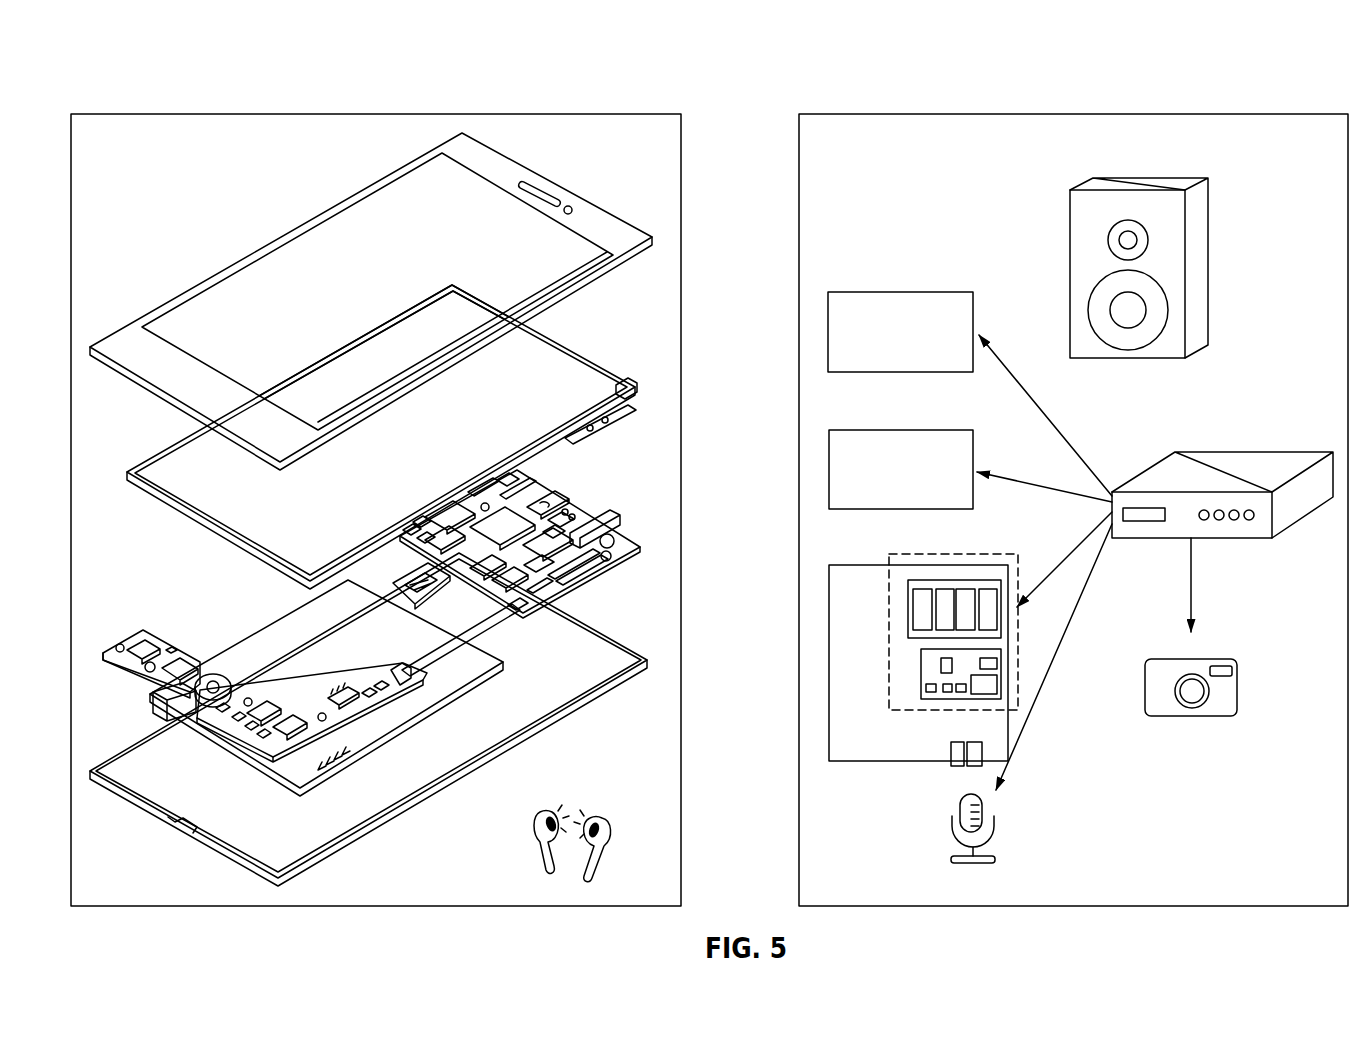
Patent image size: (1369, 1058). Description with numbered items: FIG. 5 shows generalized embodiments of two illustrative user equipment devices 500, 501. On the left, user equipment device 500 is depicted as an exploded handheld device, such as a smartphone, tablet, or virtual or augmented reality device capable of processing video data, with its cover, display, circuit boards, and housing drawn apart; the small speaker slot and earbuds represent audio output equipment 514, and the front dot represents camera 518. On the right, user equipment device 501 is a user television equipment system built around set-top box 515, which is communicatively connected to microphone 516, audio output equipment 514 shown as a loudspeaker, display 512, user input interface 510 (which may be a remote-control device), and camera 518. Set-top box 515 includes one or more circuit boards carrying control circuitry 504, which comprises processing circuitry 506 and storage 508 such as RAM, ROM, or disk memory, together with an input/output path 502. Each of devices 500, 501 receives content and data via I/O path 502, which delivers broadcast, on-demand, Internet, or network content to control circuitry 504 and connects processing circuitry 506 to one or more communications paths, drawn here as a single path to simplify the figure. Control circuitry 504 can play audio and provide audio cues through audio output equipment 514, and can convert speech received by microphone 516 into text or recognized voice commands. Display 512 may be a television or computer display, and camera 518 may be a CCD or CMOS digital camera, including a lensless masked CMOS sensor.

The user equipment device 500 is at (170, 80).
The user equipment device 501 is at (1250, 88).
The input/output (I/O) path 502 is at (292, 720).
The control circuitry 504 is at (886, 692).
The processing circuitry 506 is at (918, 669).
The storage 508 is at (905, 611).
The user input interface 510 is at (545, 403).
The display 512 is at (621, 402).
The audio output equipment 514 is at (1064, 262).
The set-top box 515 is at (1252, 452).
The microphone 516 is at (201, 705).
The camera 518 is at (582, 217).